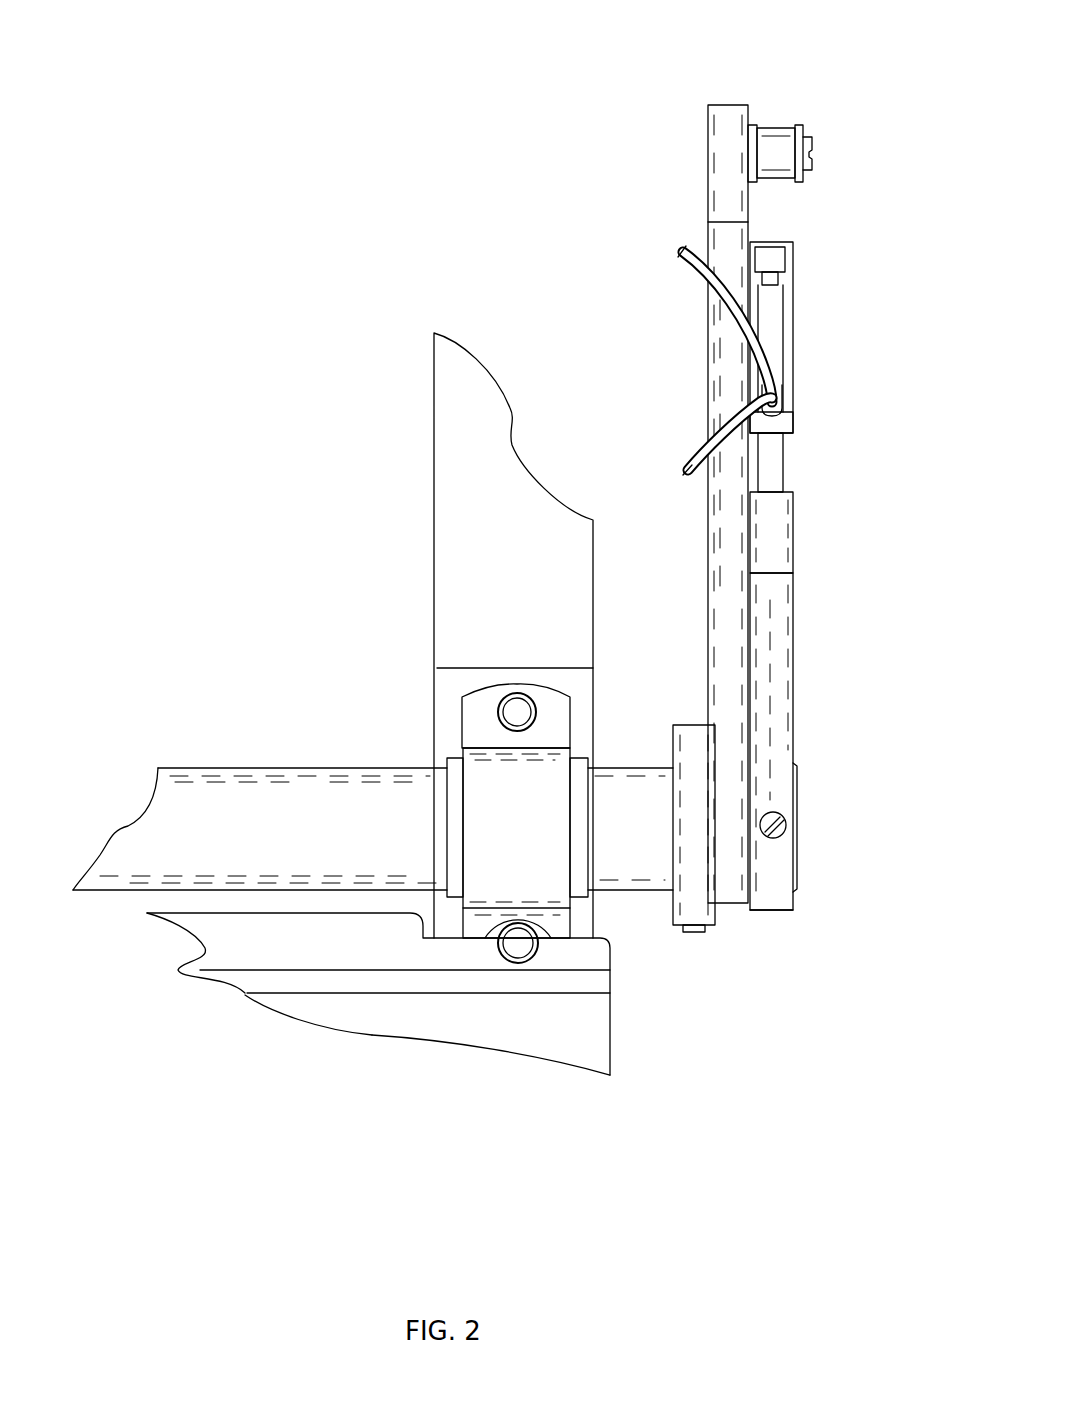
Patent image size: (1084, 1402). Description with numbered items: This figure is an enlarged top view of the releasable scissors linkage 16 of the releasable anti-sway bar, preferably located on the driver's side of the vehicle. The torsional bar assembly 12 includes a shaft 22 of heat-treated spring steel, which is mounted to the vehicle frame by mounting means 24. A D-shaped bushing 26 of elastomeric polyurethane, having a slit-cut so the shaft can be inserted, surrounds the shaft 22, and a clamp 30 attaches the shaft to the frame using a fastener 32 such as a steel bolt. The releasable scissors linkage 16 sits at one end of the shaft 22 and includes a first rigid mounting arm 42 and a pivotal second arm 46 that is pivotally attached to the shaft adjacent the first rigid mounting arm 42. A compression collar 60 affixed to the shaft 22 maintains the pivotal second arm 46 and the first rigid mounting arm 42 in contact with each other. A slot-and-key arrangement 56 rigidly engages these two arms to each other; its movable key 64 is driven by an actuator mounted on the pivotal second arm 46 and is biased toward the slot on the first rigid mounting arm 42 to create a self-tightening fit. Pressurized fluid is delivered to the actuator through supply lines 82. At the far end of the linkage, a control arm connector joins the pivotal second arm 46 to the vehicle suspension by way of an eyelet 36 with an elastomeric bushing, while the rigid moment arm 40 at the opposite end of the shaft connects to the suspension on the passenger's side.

The torsional bar assembly 12 is at (277, 1116).
The releasable scissors linkage 16 is at (776, 1105).
The shaft 22 is at (173, 790).
The mounting means 24 is at (443, 568).
The D-shaped bushing 26 is at (592, 872).
The clamp 30 is at (538, 828).
The fastener 32 is at (517, 712).
The eyelet 36 is at (774, 126).
The rigid moment arm 40 is at (808, 176).
The first rigid mounting arm 42 is at (795, 907).
The pivotal second arm 46 is at (728, 504).
The slot-and-key arrangement 56 is at (885, 361).
The compression collar 60 is at (708, 930).
The movable key 64 is at (795, 530).
The supply lines 82 is at (727, 427).